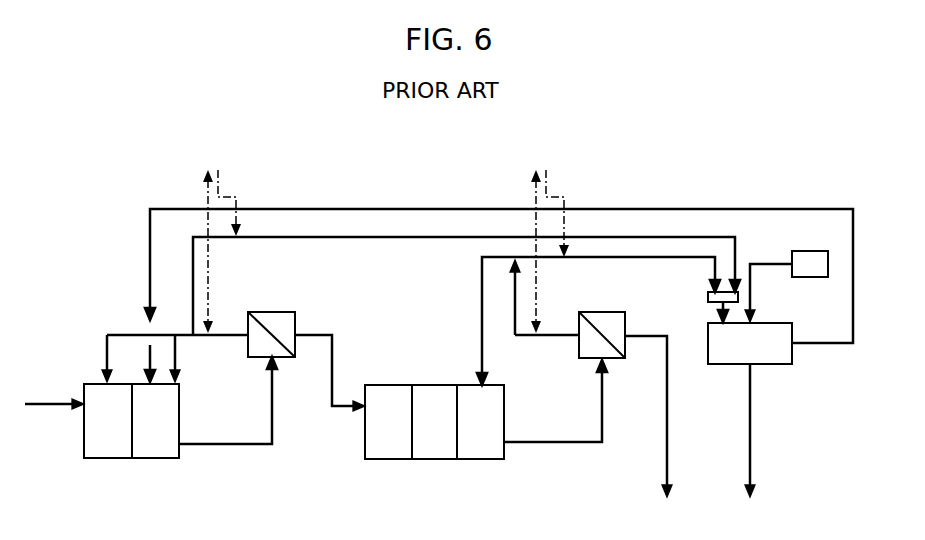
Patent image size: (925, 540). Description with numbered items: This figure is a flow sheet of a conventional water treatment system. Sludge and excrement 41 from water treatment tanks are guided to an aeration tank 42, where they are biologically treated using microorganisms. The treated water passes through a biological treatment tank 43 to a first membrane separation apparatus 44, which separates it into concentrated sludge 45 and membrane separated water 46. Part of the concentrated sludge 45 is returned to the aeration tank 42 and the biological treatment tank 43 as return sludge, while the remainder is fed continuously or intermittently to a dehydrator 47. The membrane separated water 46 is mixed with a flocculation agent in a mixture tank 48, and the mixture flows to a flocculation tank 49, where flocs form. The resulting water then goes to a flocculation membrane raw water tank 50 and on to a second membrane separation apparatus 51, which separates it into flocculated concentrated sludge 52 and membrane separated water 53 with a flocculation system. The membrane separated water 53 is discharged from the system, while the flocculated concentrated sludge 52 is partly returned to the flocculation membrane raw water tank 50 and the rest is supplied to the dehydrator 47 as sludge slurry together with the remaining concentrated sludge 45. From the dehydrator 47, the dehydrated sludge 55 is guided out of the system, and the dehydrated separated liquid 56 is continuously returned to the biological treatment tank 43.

The sludge and excrement 41 is at (53, 405).
The aeration tank 42 is at (110, 458).
The biological treatment tank 43 is at (155, 458).
The first membrane separation apparatus 44 is at (283, 357).
The concentrated sludge 45 is at (223, 333).
The membrane separated water 46 is at (333, 366).
The dehydrator 47 is at (713, 364).
The mixture tank 48 is at (388, 459).
The flocculation tank 49 is at (437, 459).
The flocculation membrane raw water tank 50 is at (490, 459).
The second membrane separation apparatus 51 is at (613, 360).
The flocculated concentrated sludge 52 is at (557, 332).
The membrane separated water with a flocculation system 53 is at (648, 333).
The dehydrated sludge 55 is at (751, 400).
The dehydrated separated liquid 56 is at (854, 287).